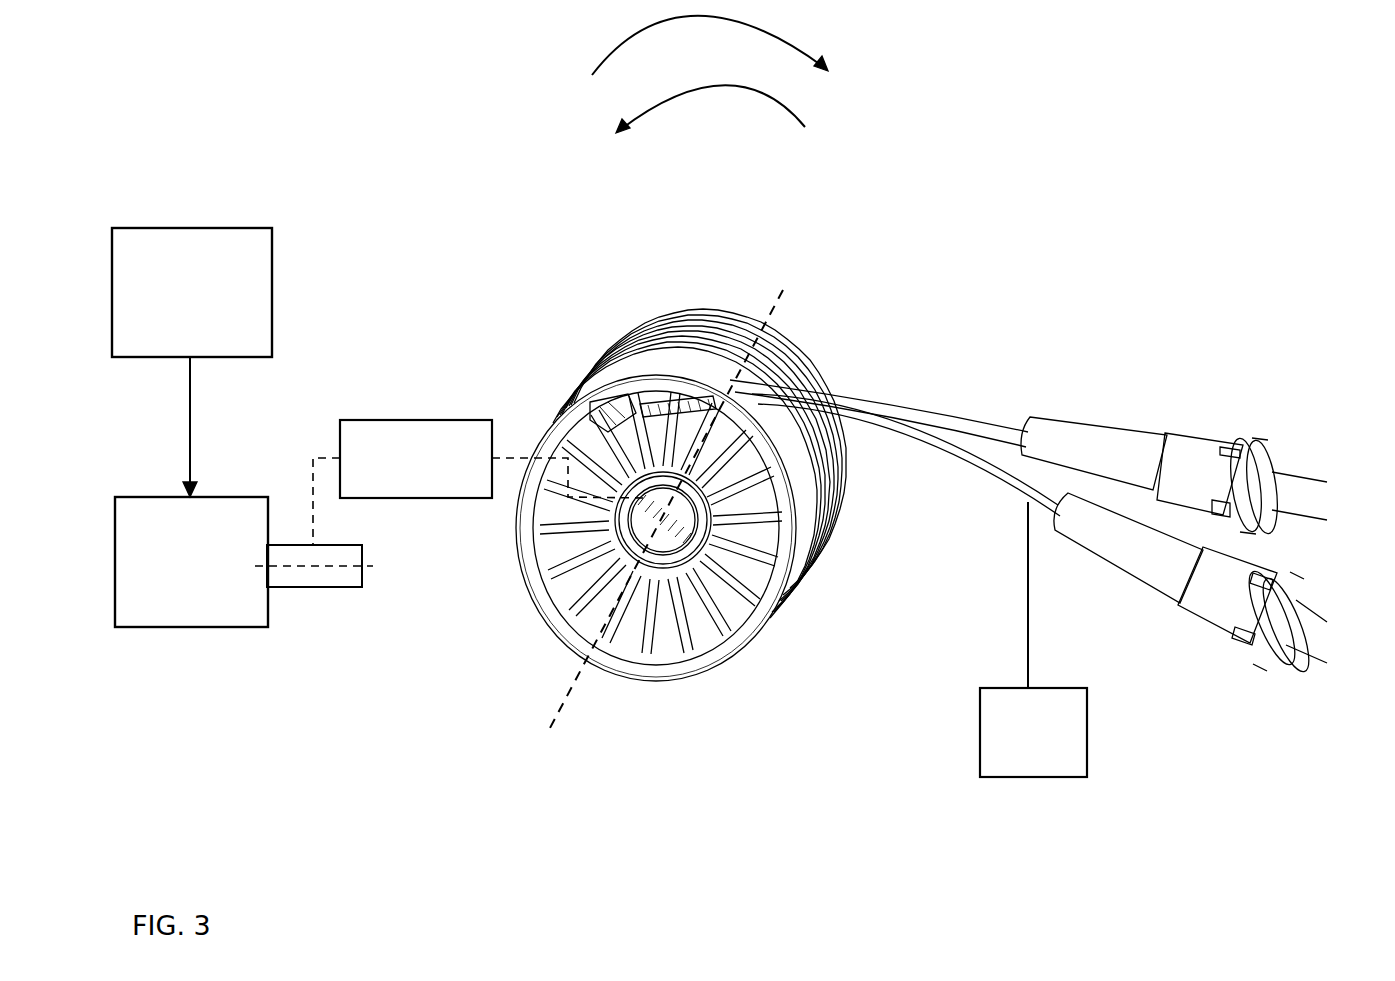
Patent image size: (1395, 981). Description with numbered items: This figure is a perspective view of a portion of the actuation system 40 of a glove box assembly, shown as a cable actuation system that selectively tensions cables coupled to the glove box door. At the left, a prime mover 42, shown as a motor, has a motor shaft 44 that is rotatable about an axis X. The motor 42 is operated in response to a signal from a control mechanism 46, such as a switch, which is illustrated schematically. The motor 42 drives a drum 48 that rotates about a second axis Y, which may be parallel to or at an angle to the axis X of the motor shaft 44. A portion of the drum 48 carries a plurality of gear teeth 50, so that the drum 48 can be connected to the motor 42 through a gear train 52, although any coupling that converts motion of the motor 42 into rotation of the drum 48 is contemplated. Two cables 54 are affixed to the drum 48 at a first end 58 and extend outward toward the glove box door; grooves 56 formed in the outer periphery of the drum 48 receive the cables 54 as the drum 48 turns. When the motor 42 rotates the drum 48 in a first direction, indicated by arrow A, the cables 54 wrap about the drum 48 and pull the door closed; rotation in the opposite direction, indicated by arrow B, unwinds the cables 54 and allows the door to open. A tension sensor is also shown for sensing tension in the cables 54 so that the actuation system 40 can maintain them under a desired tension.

The actuation system 40 is at (419, 158).
The prime mover 42 is at (191, 562).
The motor shaft 44 is at (313, 587).
The control mechanism 46 is at (192, 362).
The drum 48 is at (797, 570).
The gear teeth 50 is at (675, 543).
The gear train 52 is at (478, 482).
The cables 54 is at (982, 467).
The grooves 56 is at (675, 367).
The first end 58 is at (628, 410).